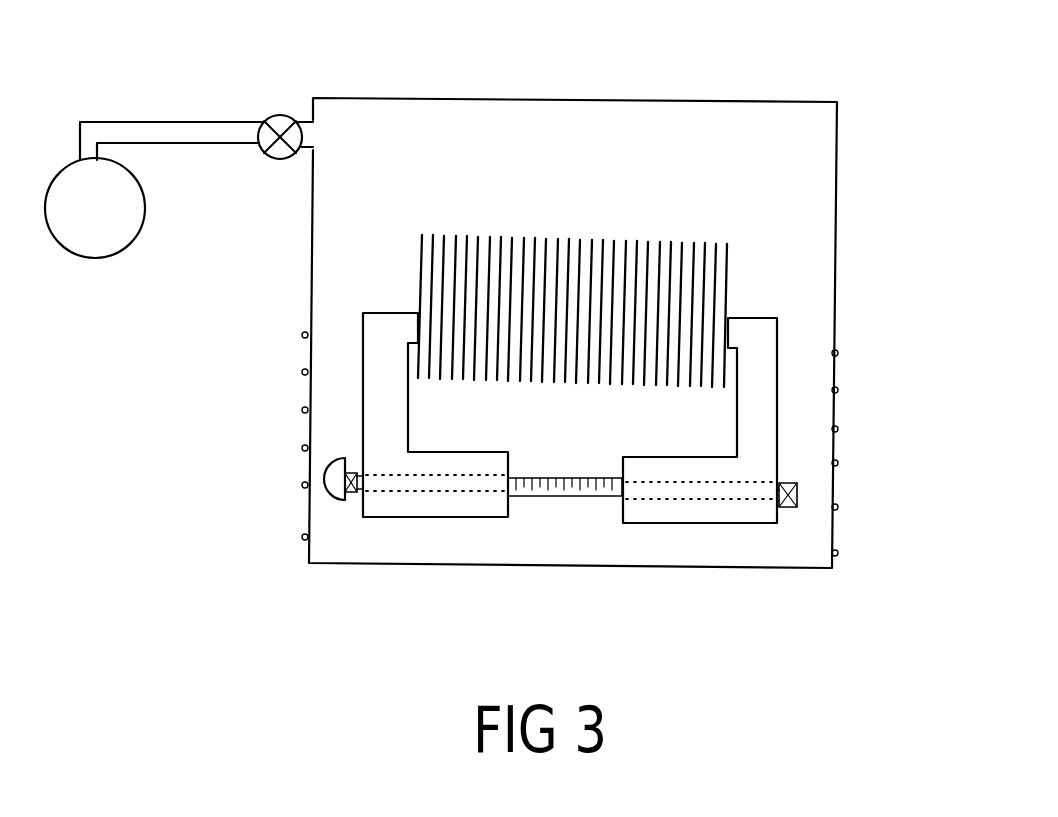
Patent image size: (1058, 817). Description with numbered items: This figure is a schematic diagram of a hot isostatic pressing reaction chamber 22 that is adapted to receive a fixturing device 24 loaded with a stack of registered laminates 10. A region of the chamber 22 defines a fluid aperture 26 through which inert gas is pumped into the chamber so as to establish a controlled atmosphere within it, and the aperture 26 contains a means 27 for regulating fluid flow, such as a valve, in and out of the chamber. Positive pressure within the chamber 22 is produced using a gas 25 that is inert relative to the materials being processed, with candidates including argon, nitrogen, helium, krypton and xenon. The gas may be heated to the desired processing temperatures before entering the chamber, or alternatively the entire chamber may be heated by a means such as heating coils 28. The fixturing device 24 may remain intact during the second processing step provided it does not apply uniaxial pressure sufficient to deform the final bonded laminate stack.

The registered laminates 10 is at (728, 278).
The reaction chamber 22 is at (722, 132).
The fixturing device 24 is at (437, 505).
The gas 25 is at (95, 225).
The fluid aperture 26 is at (212, 137).
The means for regulating fluid flow 27 is at (281, 116).
The heating coils 28 is at (838, 429).